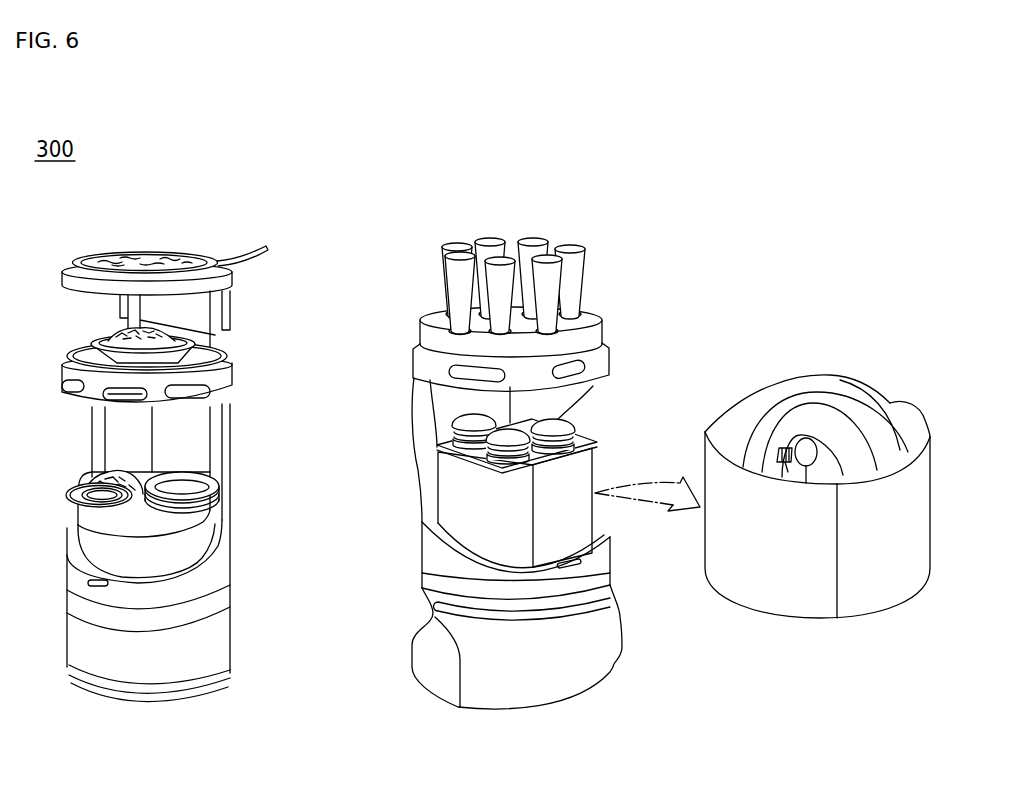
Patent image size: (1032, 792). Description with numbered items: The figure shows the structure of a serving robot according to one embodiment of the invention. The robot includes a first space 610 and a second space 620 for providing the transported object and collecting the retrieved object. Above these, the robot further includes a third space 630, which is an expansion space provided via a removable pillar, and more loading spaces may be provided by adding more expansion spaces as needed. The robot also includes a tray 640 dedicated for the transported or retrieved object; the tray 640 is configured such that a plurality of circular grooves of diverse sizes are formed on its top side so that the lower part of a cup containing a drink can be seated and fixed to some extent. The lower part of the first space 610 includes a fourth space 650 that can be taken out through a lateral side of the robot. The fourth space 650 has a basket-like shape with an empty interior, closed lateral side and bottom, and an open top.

The first space 610 is at (212, 522).
The second space 620 is at (220, 379).
The third space 630 is at (222, 280).
The tray 640 is at (433, 335).
The fourth space 650 is at (457, 508).